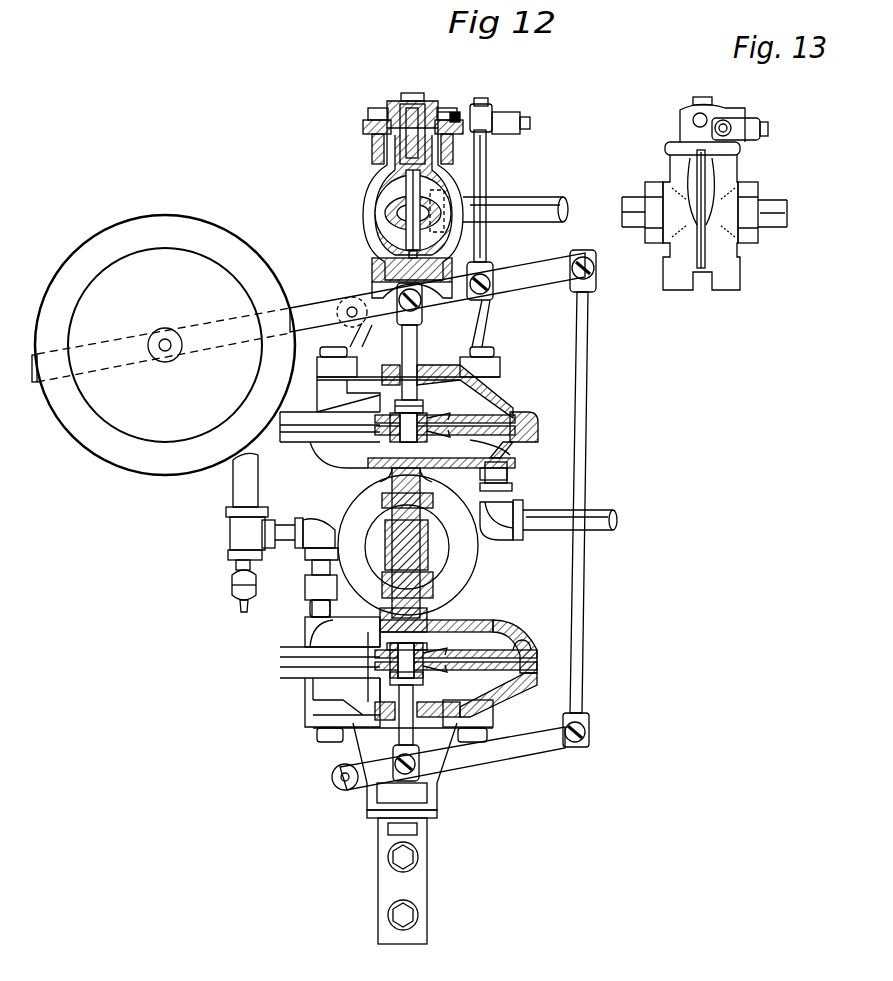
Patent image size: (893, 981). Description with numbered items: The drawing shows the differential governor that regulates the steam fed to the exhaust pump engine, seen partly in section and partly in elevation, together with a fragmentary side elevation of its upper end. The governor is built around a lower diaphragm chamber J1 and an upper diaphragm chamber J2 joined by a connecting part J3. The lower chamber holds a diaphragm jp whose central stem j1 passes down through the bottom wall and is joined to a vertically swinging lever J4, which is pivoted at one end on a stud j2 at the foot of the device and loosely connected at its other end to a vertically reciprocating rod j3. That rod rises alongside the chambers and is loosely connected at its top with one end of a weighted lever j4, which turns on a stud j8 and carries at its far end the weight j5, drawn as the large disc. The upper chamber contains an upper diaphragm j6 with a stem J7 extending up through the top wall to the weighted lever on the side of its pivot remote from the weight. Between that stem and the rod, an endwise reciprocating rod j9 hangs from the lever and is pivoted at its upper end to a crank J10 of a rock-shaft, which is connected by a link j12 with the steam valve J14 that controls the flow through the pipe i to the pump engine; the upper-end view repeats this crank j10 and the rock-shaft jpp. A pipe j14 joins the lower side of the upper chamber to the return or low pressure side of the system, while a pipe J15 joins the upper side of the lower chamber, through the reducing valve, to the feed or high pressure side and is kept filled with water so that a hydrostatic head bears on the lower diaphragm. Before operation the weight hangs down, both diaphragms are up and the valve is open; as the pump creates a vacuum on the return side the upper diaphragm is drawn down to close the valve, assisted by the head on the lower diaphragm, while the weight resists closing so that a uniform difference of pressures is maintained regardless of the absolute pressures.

In FIG. 12, the weight j5 is at (163, 345).
In FIG. 12, the stud j8 is at (350, 298).
In FIG. 12, the stem J7 is at (420, 362).
In FIG. 12, the endwise reciprocating rod j9 is at (486, 258).
In FIG. 13, the endwise reciprocating rod j9 is at (698, 238).
In FIG. 12, the weighted lever j4 is at (572, 258).
In FIG. 12, the vertically reciprocating rod j3 is at (583, 690).
In FIG. 12, the steam valve J14 is at (405, 212).
In FIG. 12, the link j12 is at (456, 114).
In FIG. 12, the crank J10 is at (495, 114).
In FIG. 12, the upper diaphragm chamber J2 is at (505, 410).
In FIG. 12, the upper diaphragm j6 is at (492, 440).
In FIG. 12, the connecting part J3 is at (450, 545).
In FIG. 12, the pipe j14 is at (614, 510).
In FIG. 12, the pipe J15 is at (240, 490).
In FIG. 12, the lower diaphragm chamber J1 is at (455, 625).
In FIG. 12, the diaphragm jp is at (495, 648).
In FIG. 12, the stem j1 is at (402, 733).
In FIG. 12, the stud j2 is at (343, 790).
In FIG. 12, the vertically swinging lever J4 is at (513, 752).
In FIG. 13, the pipe i is at (630, 198).
In FIG. 13, the crank j10 is at (700, 112).
In FIG. 13, the rock-shaft jpp is at (740, 122).